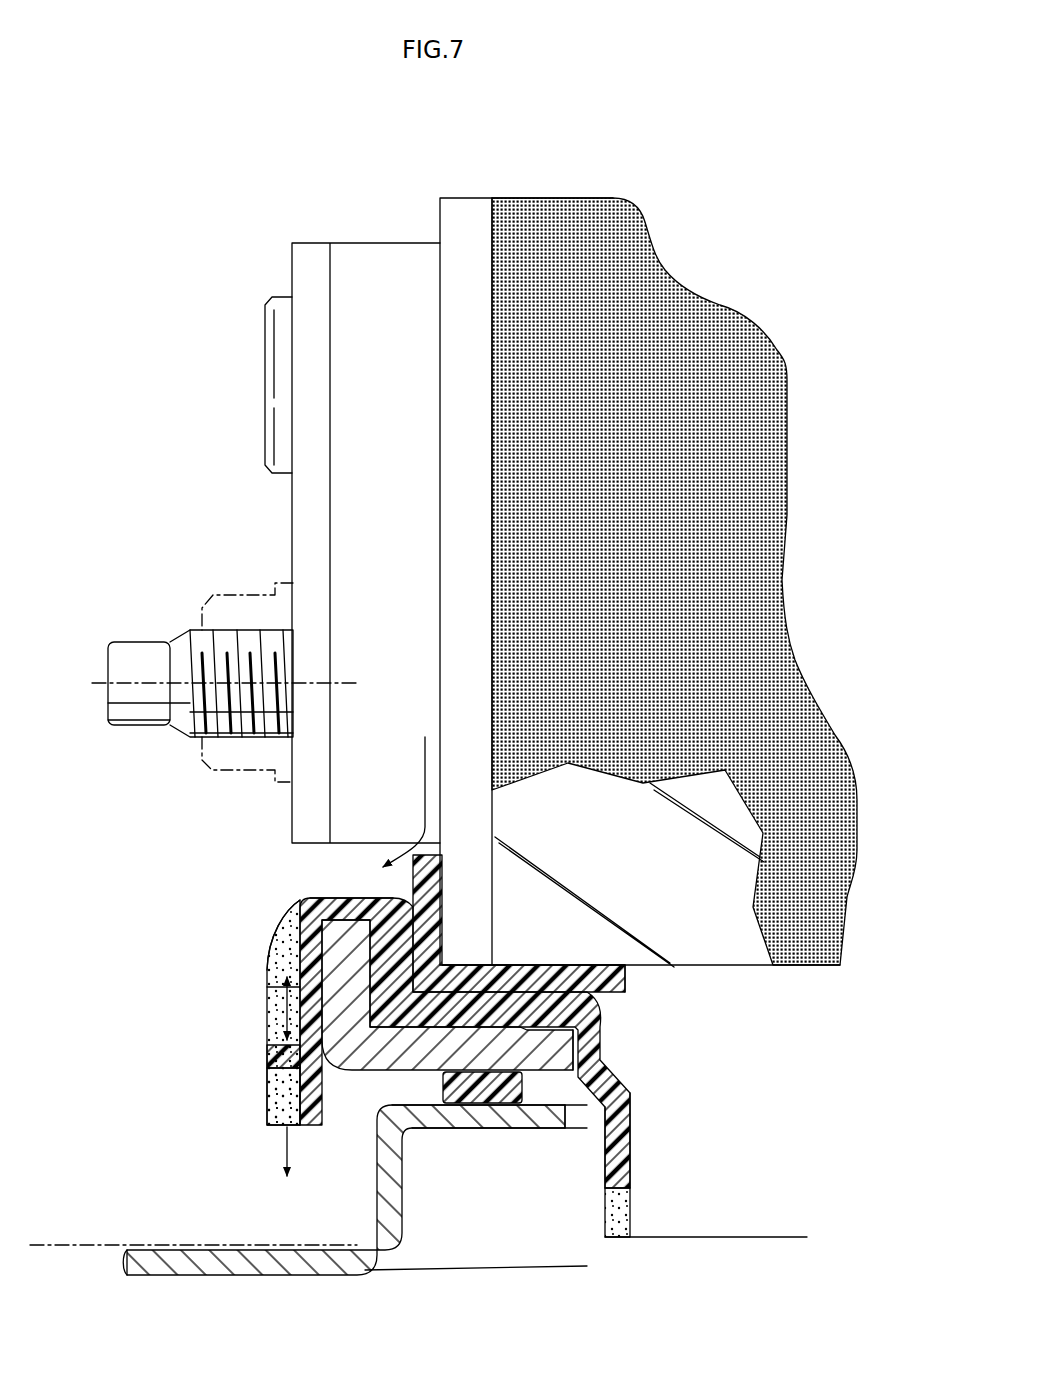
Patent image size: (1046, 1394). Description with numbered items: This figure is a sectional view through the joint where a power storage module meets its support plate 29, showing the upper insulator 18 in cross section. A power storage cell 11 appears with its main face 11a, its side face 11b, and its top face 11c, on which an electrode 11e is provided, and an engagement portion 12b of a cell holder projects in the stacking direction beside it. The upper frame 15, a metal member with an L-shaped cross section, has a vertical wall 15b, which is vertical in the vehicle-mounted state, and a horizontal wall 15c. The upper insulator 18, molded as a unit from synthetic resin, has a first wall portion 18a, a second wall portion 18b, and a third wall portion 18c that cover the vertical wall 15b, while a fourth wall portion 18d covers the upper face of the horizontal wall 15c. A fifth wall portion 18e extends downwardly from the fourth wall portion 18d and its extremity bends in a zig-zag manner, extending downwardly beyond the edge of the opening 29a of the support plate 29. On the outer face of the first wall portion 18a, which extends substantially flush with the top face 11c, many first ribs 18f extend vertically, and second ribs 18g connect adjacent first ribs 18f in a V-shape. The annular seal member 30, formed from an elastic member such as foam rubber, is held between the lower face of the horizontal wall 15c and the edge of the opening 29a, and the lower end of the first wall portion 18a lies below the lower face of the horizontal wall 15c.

The power storage cell 11 is at (540, 555).
The main face 11a is at (770, 447).
The side face 11b is at (728, 967).
The top face 11c is at (438, 297).
The electrode 11e is at (152, 655).
The engagement portion 12b is at (588, 975).
The upper frame 15 is at (504, 1056).
The vertical wall 15b is at (335, 967).
The horizontal wall 15c is at (577, 1043).
The upper insulator 18 is at (454, 1018).
The first wall portion 18a is at (297, 1002).
The second wall portion 18b is at (365, 891).
The third wall portion 18c is at (400, 953).
The fourth wall portion 18d is at (528, 963).
The fifth wall portion 18e is at (620, 1123).
The first rib 18f is at (267, 1093).
The second rib 18g is at (268, 1060).
The support plate 29 is at (418, 1233).
The opening 29a is at (578, 1127).
The seal member 30 is at (482, 1103).